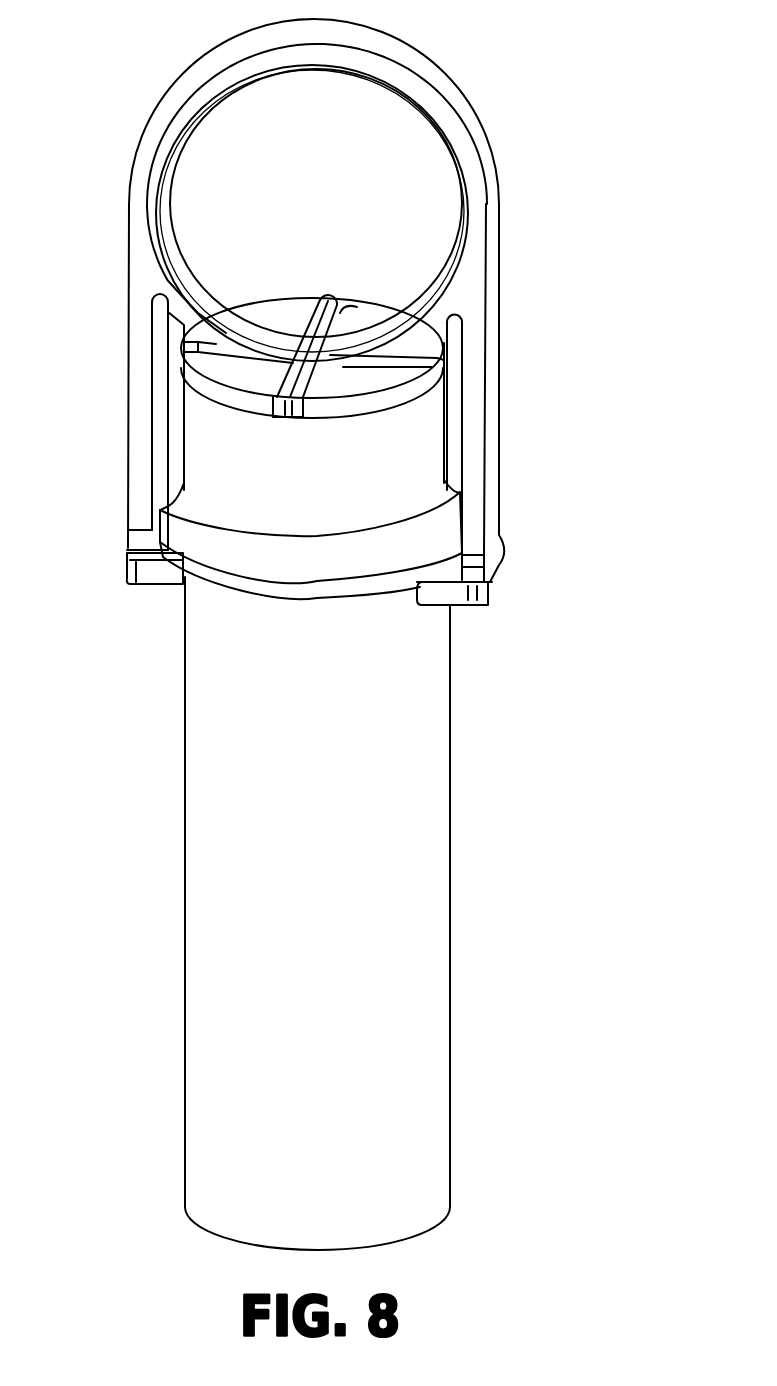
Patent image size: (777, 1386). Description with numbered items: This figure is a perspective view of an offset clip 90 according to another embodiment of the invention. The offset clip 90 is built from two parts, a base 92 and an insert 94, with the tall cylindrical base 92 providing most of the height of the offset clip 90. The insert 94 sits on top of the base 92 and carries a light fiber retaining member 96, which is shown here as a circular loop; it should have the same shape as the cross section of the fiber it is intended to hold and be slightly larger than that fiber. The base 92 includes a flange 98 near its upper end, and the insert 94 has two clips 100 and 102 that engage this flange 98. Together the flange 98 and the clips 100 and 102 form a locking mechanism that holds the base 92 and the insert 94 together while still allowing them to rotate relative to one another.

The offset clip 90 is at (556, 658).
The base 92 is at (428, 903).
The insert 94 is at (492, 311).
The light fiber retaining member 96 is at (428, 84).
The flange 98 is at (217, 558).
The clip 100 is at (148, 572).
The clip 102 is at (490, 581).